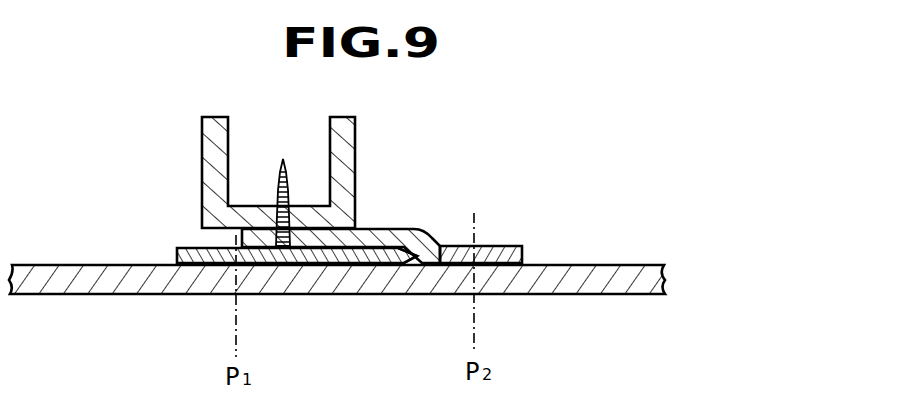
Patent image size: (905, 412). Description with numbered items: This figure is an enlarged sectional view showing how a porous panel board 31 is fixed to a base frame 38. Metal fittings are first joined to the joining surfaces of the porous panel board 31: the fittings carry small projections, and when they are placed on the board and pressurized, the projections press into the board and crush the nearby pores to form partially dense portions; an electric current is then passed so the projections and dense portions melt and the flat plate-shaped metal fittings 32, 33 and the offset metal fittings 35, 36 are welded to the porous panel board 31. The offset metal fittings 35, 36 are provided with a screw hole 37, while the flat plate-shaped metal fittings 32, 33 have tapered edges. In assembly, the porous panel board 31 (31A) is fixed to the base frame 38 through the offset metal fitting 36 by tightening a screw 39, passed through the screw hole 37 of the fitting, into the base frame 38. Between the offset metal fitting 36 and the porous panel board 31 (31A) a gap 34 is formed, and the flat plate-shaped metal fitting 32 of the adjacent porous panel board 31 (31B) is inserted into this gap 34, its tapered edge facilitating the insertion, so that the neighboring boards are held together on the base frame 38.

The porous panel board 31 is at (337, 316).
The porous panel board 31A is at (337, 316).
The adjacent porous panel board 31B is at (108, 296).
The flat plate-shaped metal fitting 32 is at (252, 219).
The flat plate-shaped metal fitting 33 is at (187, 248).
The gap 34 is at (417, 258).
The offset metal fitting 35 is at (500, 246).
The offset metal fitting 36 is at (420, 218).
The screw hole 37 is at (286, 250).
The base frame 38 is at (356, 144).
The screw 39 is at (295, 178).